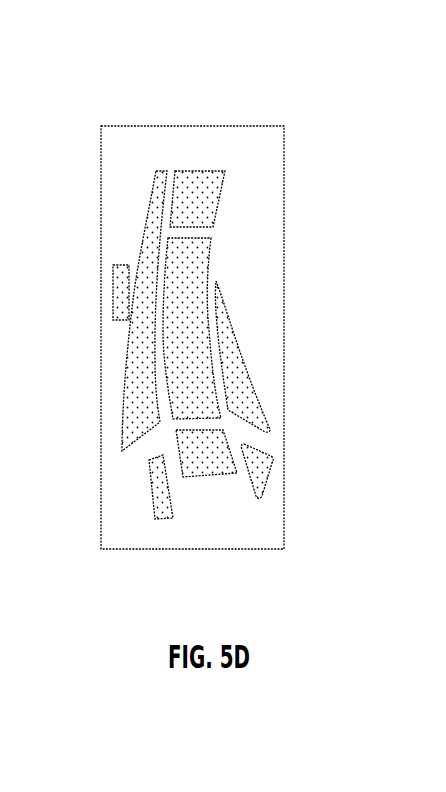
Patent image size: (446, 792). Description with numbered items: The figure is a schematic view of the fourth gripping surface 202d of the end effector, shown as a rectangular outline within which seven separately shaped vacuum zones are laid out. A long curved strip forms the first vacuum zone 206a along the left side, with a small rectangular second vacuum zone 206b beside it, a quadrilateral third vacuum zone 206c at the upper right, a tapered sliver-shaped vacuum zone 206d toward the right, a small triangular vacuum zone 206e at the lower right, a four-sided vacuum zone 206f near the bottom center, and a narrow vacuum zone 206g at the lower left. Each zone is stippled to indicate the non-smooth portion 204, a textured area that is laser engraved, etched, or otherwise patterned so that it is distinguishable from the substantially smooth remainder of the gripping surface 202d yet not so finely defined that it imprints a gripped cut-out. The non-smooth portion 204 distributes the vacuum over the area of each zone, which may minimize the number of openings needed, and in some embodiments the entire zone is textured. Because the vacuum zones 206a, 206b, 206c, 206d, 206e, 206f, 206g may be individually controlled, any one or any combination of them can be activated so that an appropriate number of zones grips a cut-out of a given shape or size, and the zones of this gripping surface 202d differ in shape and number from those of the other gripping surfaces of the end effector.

The fourth gripping surface 202d is at (168, 109).
The non-smooth portion 204 is at (247, 327).
The first vacuum zone 206a is at (140, 403).
The second vacuum zone 206b is at (118, 300).
The third vacuum zone 206c is at (213, 185).
The vacuum zone 206d is at (251, 392).
The vacuum zone 206e is at (264, 465).
The vacuum zone 206f is at (200, 463).
The vacuum zone 206g is at (153, 507).